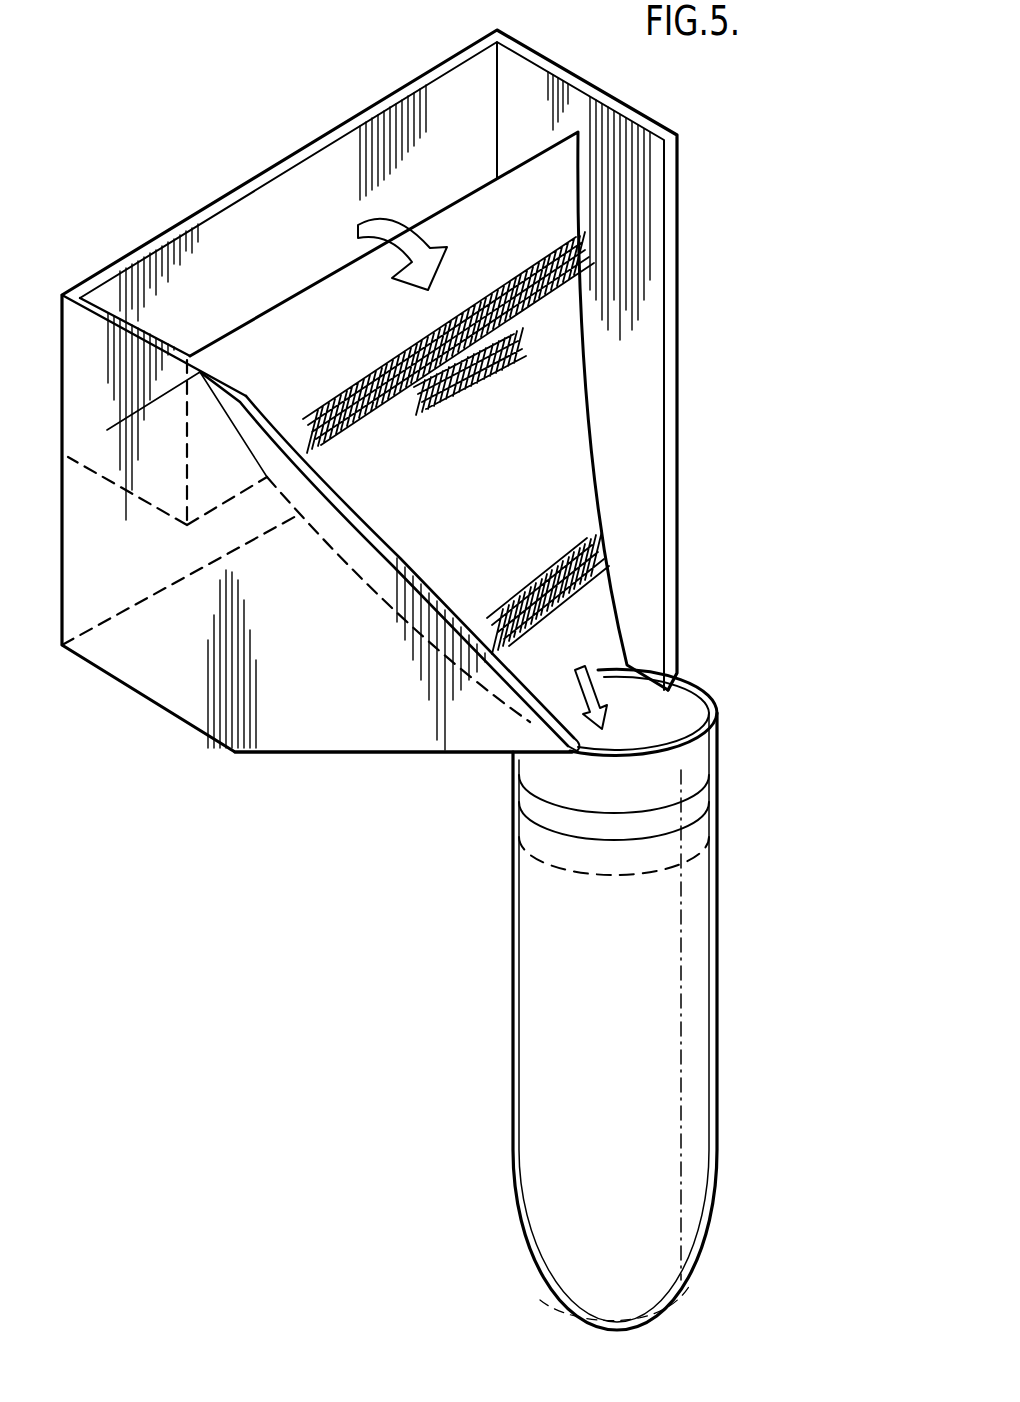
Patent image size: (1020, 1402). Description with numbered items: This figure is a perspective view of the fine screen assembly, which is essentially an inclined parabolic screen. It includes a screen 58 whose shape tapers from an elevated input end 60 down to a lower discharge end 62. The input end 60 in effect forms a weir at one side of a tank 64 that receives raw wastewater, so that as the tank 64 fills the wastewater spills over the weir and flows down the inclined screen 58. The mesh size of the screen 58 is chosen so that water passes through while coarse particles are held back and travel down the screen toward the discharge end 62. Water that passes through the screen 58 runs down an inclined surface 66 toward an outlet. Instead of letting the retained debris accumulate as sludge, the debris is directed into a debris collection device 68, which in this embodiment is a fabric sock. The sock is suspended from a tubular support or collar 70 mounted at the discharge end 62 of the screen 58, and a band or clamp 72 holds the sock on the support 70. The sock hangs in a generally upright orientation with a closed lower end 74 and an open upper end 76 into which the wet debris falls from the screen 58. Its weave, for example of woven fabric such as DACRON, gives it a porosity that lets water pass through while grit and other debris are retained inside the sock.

The screen 58 is at (565, 375).
The input end 60 is at (494, 178).
The discharge end 62 is at (608, 681).
The tank 64 is at (222, 302).
The inclined surface 66 is at (372, 715).
The debris collection device 68 is at (724, 1003).
The tubular support 70 is at (688, 856).
The band 72 is at (698, 795).
The closed lower end 74 is at (665, 1312).
The open upper end 76 is at (693, 713).